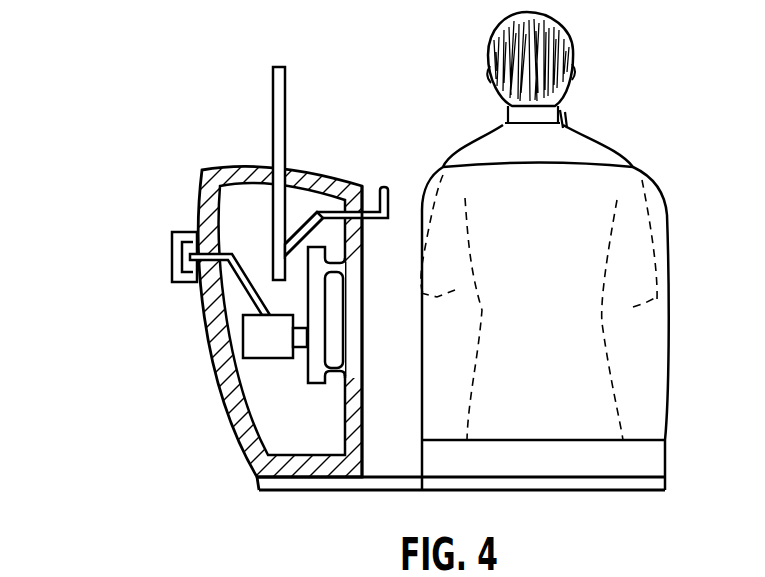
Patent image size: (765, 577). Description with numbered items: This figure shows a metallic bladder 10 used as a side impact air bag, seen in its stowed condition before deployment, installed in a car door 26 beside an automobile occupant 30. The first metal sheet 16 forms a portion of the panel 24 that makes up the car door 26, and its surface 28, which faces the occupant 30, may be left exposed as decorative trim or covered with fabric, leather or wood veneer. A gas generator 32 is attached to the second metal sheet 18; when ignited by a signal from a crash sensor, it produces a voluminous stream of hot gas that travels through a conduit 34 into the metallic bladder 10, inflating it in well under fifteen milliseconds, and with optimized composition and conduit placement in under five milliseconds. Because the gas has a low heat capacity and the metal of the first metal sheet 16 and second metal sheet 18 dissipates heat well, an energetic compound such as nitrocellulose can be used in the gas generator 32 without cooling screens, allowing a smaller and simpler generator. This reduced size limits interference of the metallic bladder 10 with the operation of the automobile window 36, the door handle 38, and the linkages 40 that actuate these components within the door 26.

The metallic bladder 10 is at (381, 262).
The first metal sheet 16 is at (358, 380).
The second metal sheet 18 is at (318, 383).
The panel 24 is at (333, 183).
The car door 26 is at (186, 384).
The surface 28 is at (363, 322).
The automobile occupant 30 is at (625, 110).
The gas generator 32 is at (243, 330).
The conduit 34 is at (303, 348).
The automobile window 36 is at (277, 133).
The door handle 38 is at (172, 257).
The linkages 40 is at (310, 216).